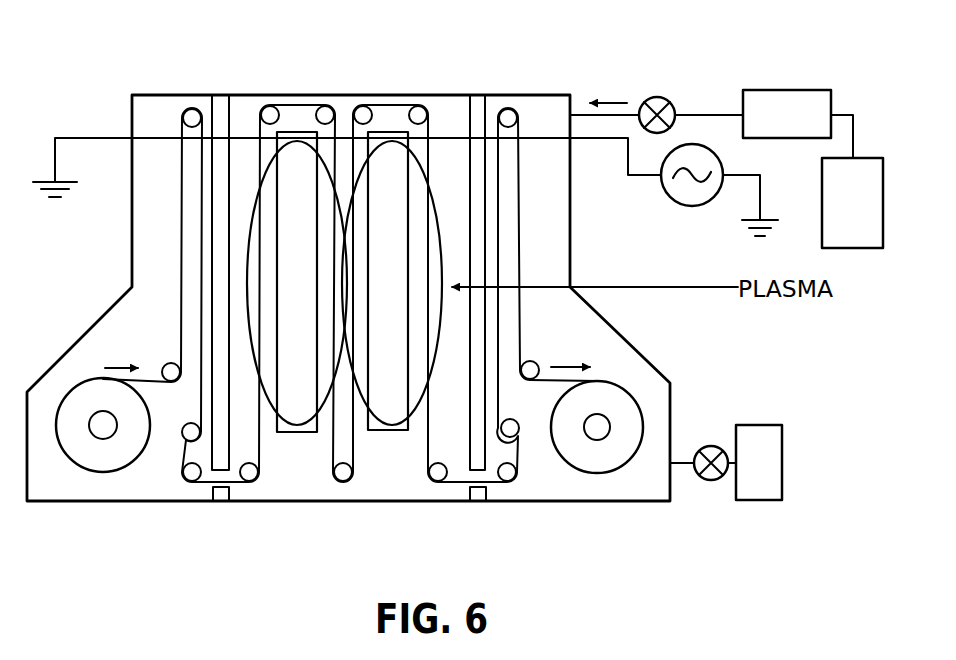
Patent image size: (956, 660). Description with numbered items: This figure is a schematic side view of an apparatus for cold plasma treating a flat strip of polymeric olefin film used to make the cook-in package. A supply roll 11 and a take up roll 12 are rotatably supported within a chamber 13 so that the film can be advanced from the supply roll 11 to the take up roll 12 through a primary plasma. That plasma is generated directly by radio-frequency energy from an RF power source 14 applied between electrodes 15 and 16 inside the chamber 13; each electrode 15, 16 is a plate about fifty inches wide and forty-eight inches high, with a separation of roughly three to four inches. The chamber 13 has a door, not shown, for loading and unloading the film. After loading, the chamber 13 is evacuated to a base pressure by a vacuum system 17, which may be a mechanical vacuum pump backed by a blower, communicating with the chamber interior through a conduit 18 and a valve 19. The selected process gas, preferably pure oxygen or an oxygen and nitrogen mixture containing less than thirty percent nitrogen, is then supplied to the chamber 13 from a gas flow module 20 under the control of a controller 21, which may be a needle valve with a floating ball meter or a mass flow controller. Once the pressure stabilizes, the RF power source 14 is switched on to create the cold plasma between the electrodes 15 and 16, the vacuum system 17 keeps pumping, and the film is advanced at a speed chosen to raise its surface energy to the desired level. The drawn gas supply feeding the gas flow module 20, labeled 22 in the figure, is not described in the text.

The supply roll 11 is at (101, 477).
The take up roll 12 is at (597, 477).
The chamber 13 is at (645, 351).
The RF power source 14 is at (657, 197).
The electrode 15 is at (299, 129).
The electrode 16 is at (390, 129).
The vacuum system 17 is at (762, 460).
The conduit 18 is at (682, 456).
The valve 19 is at (712, 483).
The gas flow module 20 is at (787, 87).
The controller 21 is at (658, 96).
The gas supply 22 is at (870, 155).